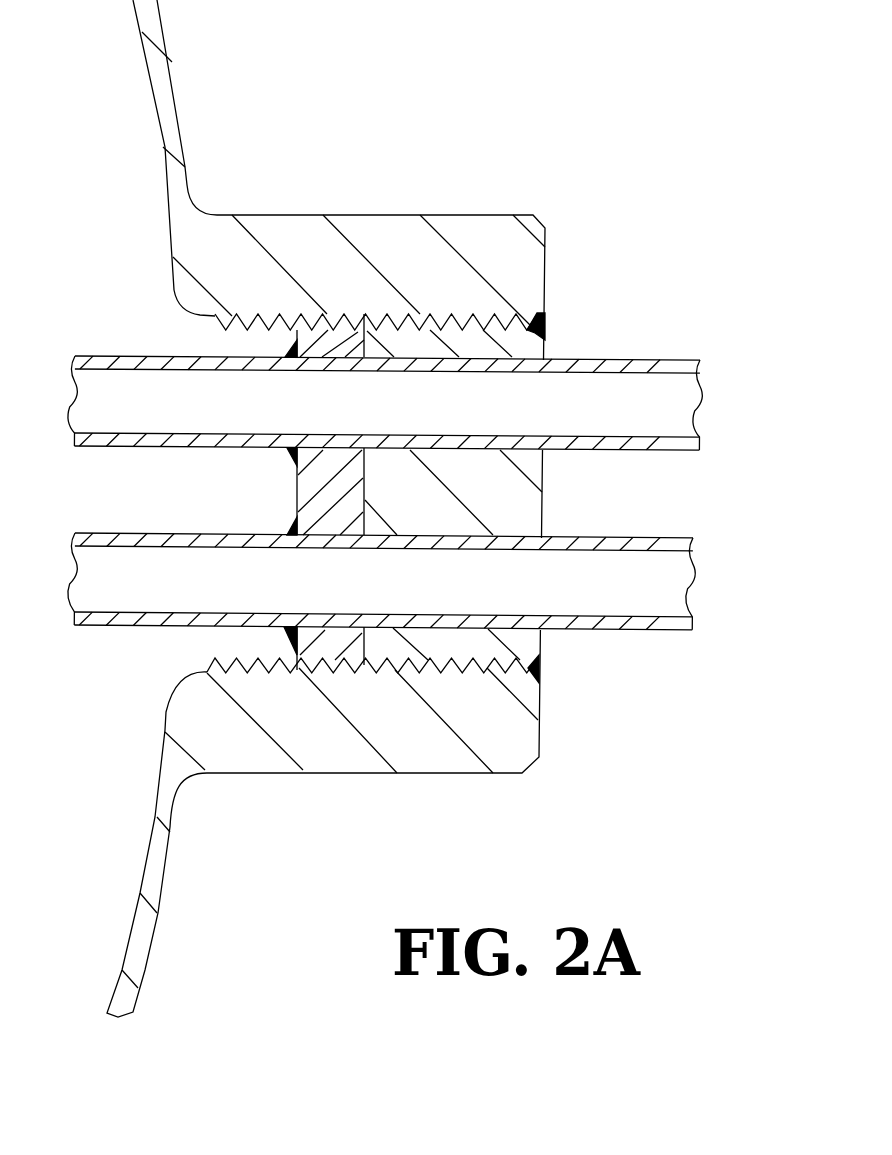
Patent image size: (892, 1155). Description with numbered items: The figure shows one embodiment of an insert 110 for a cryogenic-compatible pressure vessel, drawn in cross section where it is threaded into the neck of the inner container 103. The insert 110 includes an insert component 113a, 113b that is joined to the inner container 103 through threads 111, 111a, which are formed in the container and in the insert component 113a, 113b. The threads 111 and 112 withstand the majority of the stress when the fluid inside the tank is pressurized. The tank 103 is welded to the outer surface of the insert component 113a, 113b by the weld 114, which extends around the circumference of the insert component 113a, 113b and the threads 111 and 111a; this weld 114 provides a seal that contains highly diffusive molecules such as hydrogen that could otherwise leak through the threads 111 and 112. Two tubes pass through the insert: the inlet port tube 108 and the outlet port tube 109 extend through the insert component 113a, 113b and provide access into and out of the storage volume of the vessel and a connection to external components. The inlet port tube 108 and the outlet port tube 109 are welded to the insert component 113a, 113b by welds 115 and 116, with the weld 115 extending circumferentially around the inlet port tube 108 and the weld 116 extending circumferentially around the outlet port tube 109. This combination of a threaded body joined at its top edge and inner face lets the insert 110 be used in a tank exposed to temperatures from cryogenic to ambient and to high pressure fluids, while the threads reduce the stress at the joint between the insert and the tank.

The inner container 103 is at (185, 163).
The inlet port tube 108 is at (660, 358).
The outlet port tube 109 is at (678, 630).
The insert 110 is at (470, 101).
The threads 111 is at (392, 456).
The threads 111a is at (433, 313).
The threads 112 is at (431, 571).
The insert component 113a is at (325, 490).
The insert component 113b is at (513, 510).
The weld 114 is at (545, 327).
The weld 115 is at (292, 357).
The weld 116 is at (293, 532).